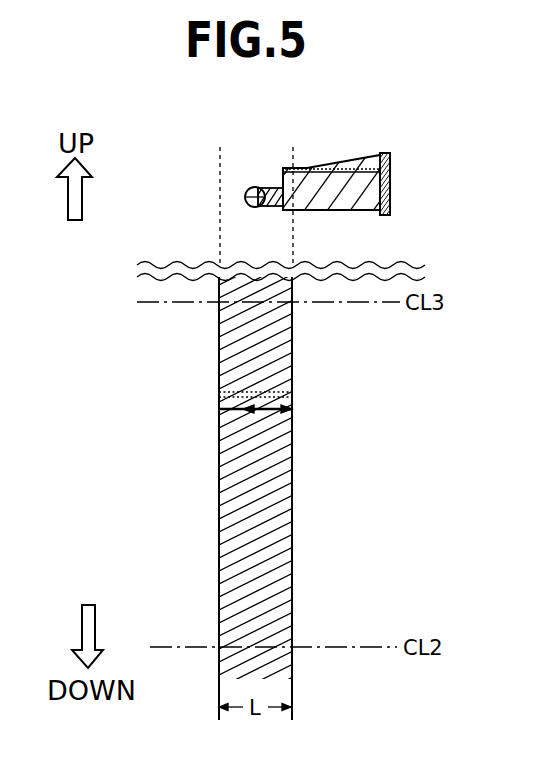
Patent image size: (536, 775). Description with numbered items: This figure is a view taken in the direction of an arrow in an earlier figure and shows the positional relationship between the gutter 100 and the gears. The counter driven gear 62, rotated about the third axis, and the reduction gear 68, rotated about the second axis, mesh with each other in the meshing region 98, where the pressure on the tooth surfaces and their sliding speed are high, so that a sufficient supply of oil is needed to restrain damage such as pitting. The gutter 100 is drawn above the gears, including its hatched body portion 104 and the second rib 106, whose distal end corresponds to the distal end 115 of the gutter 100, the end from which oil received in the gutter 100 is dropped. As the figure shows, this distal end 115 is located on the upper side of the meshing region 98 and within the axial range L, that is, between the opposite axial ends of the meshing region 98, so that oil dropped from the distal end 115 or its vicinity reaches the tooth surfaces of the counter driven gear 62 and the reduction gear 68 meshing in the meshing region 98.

The counter driven gear 62 is at (253, 502).
The reduction gear 68 is at (260, 317).
The meshing region 98 is at (292, 406).
The gutter 100 is at (284, 187).
The body 104 is at (343, 197).
The second rib 106 is at (268, 188).
The distal end 115 is at (245, 198).